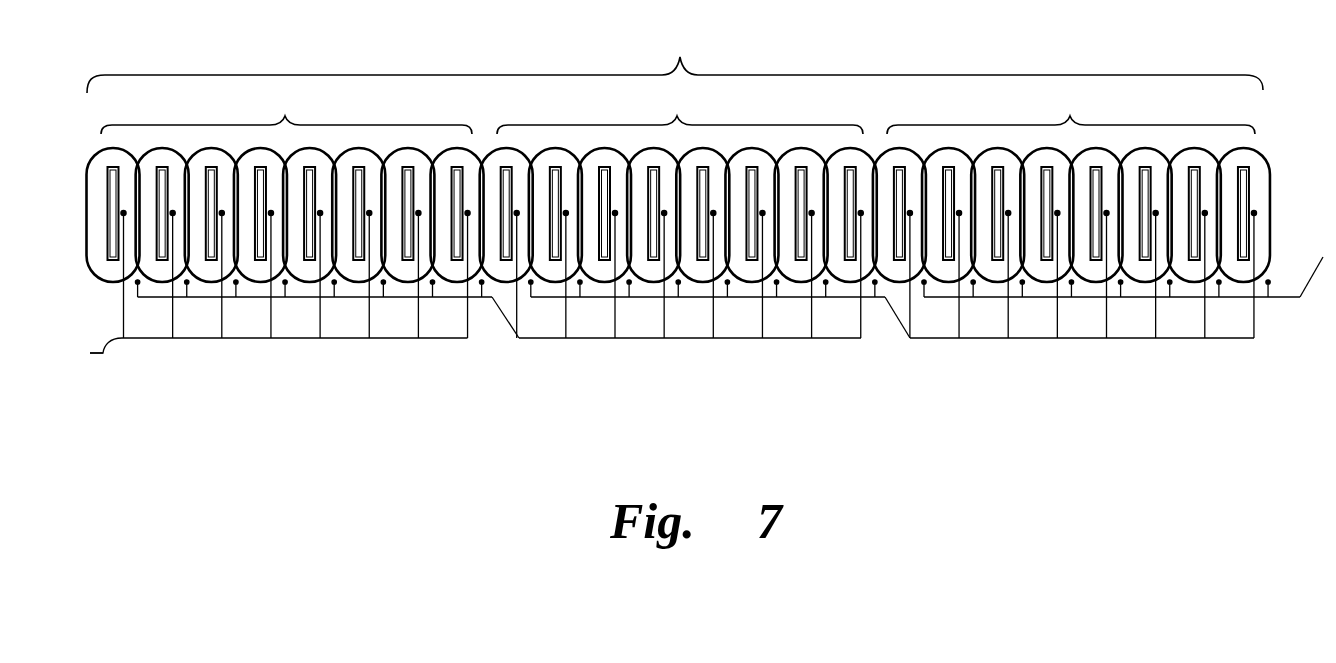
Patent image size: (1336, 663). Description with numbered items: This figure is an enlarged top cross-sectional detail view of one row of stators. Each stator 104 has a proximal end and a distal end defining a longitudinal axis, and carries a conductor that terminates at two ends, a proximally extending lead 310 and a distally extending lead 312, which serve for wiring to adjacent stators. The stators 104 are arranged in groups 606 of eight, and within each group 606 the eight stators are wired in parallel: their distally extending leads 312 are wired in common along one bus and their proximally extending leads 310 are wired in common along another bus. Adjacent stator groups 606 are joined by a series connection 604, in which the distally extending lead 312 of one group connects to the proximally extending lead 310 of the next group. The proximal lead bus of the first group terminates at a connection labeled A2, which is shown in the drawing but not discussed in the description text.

The stator 104 is at (678, 154).
The stator group 606 is at (678, 183).
The proximally extending lead 310 is at (568, 338).
The distally extending lead 312 is at (633, 297).
The series connection 604 is at (507, 317).
The terminal A2 is at (103, 353).